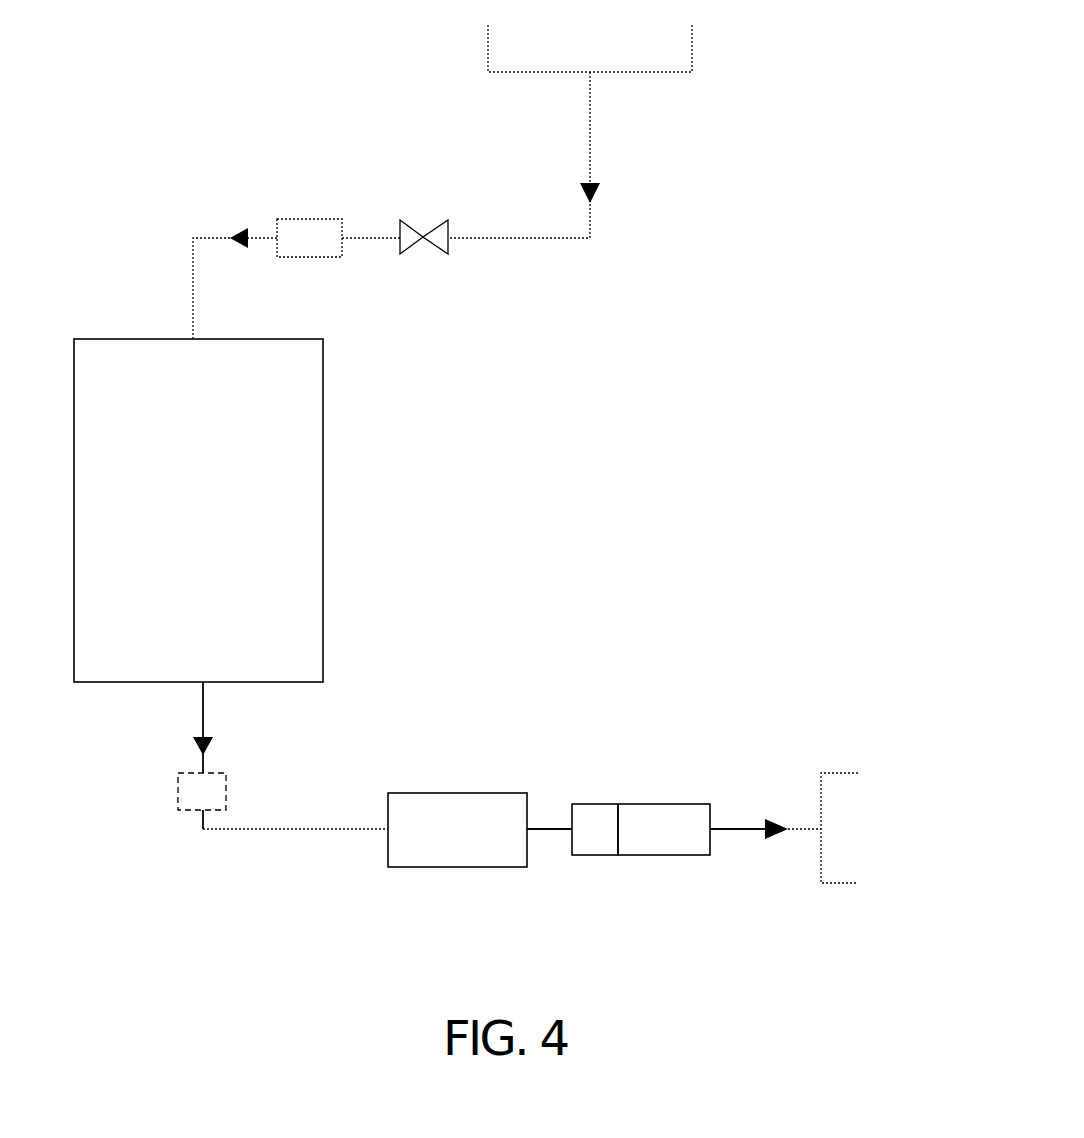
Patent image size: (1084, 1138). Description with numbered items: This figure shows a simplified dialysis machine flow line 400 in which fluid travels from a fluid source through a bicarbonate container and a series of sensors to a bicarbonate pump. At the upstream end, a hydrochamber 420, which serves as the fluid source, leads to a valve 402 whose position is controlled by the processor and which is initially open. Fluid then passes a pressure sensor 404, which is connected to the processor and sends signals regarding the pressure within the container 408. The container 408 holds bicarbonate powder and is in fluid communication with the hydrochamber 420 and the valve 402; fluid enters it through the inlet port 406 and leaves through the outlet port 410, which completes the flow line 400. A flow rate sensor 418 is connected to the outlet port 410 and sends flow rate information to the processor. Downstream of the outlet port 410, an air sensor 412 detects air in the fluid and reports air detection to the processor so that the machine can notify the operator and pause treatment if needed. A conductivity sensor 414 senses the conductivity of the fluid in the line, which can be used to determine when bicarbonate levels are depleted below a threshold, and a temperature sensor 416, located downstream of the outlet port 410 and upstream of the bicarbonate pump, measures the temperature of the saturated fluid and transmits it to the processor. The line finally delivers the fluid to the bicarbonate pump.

The dialysis flow line 400 is at (866, 141).
The valve 402 is at (423, 257).
The pressure sensor 404 is at (323, 237).
The inlet port 406 is at (176, 329).
The container 408 is at (230, 525).
The outlet port 410 is at (187, 696).
The air sensor 412 is at (443, 800).
The conductivity sensor 414 is at (600, 835).
The temperature sensor 416 is at (672, 830).
The flow rate sensor 418 is at (220, 800).
The hydrochamber 420 is at (692, 46).